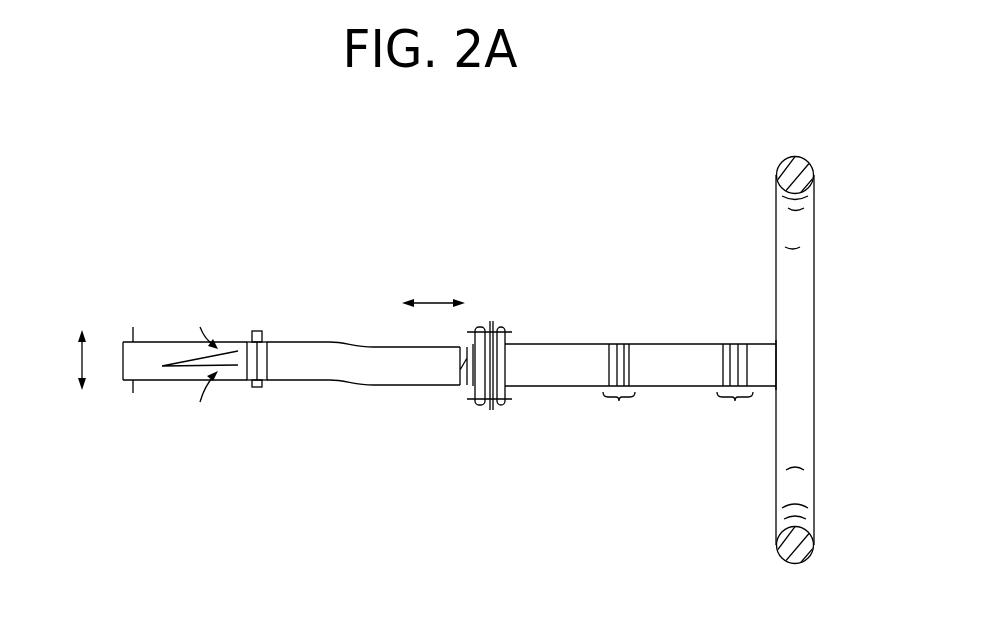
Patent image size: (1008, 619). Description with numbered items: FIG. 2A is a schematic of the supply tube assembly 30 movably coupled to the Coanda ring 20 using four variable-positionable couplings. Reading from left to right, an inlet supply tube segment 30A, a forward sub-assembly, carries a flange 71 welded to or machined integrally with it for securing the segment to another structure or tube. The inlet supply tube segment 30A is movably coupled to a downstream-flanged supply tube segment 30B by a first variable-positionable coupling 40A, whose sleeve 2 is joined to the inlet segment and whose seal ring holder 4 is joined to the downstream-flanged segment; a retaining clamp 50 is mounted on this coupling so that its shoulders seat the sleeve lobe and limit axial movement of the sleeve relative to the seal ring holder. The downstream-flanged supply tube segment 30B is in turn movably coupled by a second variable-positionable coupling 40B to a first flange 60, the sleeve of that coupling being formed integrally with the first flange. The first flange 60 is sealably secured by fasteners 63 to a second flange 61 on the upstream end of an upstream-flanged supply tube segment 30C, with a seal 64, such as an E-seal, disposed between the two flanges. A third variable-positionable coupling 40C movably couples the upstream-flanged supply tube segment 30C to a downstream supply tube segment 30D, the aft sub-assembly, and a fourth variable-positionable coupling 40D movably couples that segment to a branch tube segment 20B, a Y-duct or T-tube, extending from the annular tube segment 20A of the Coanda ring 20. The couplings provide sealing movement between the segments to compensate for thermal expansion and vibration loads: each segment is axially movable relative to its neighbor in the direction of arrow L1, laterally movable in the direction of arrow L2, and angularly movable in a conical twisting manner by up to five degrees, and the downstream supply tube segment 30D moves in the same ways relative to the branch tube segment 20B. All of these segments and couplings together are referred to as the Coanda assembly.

The steering wheel 20 is at (826, 200).
The annular tube segment 20A is at (797, 265).
The branch tube segment 20B is at (763, 357).
The supply tube assembly 30 is at (125, 255).
The inlet supply tube segment 30A is at (172, 383).
The downstream-flanged supply tube segment 30B is at (383, 380).
The upstream-flanged supply tube segment 30C is at (568, 387).
The downstream supply tube segment 30D is at (676, 375).
The first variable-positionable coupling 40A is at (257, 388).
The second variable-positionable coupling 40B is at (467, 323).
The third variable-positionable coupling 40C is at (619, 401).
The fourth variable-positionable coupling 40D is at (735, 401).
The retaining clamp 50 is at (257, 332).
The first flange 60 is at (482, 410).
The second flange 61 is at (500, 410).
The fasteners 63 is at (467, 332).
The seal 64 is at (493, 420).
The flange 71 is at (132, 387).
The sleeve 2 is at (245, 377).
The seal ring holder 4 is at (263, 367).
The arrow L1 is at (433, 303).
The arrow L2 is at (82, 363).